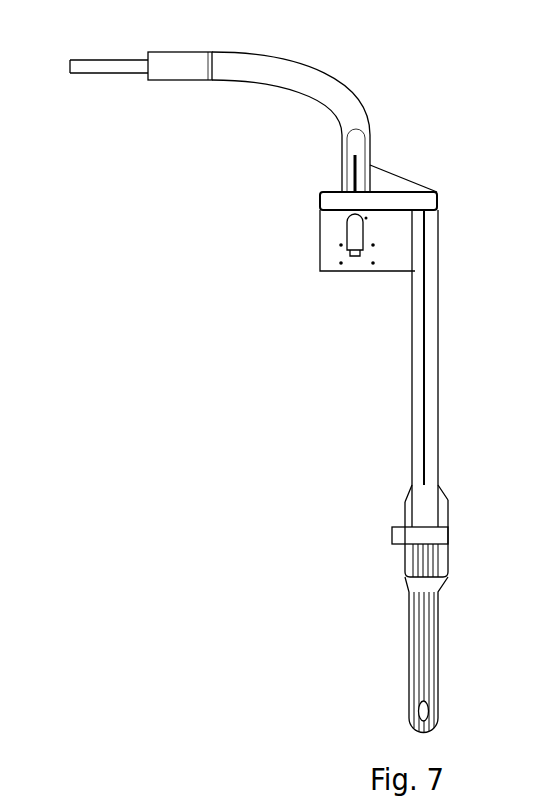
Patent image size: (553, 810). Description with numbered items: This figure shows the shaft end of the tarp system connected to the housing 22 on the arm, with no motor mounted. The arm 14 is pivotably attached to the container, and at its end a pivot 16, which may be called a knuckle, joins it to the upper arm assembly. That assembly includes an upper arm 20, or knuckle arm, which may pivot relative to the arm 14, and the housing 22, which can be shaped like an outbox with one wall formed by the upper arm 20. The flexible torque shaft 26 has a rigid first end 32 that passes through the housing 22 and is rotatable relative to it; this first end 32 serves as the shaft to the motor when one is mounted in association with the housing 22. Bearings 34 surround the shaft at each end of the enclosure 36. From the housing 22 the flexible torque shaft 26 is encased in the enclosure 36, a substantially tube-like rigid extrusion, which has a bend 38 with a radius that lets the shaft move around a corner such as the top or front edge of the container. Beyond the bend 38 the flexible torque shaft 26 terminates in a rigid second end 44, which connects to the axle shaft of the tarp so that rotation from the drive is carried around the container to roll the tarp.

The arm 14 is at (432, 650).
The pivot 16 is at (450, 535).
The upper arm 20 is at (430, 370).
The housing 22 is at (398, 262).
The flexible torque shaft 26 is at (128, 73).
The first end 32 is at (355, 265).
The bearings 34 is at (345, 242).
The enclosure 36 is at (237, 57).
The bend 38 is at (330, 82).
The second end 44 is at (70, 73).